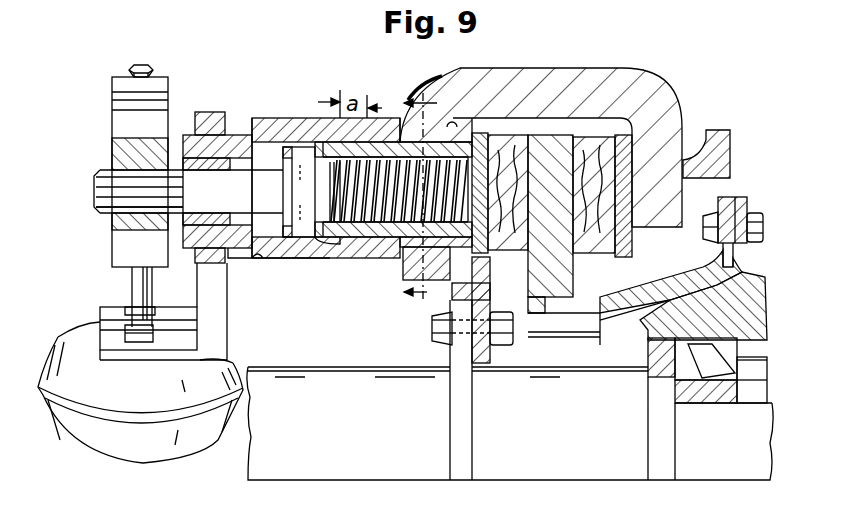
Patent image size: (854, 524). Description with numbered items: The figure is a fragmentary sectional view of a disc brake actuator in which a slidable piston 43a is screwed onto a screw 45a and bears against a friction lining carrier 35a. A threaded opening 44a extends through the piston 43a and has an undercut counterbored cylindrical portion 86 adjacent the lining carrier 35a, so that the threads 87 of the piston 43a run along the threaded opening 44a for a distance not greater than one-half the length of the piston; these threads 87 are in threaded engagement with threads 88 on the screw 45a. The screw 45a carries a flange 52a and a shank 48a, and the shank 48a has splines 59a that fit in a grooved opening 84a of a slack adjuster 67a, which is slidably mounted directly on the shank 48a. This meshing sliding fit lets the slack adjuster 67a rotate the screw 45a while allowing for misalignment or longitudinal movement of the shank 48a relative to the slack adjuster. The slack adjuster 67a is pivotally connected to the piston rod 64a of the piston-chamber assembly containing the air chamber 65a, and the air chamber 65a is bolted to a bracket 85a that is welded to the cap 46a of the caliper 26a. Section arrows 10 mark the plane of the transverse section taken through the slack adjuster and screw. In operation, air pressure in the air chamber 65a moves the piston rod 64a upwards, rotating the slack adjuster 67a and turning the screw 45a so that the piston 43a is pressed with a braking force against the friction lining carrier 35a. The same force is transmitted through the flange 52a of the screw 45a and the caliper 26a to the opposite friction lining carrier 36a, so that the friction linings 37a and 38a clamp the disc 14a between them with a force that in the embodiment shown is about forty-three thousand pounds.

The slack adjuster 67a is at (112, 115).
The splines 59a is at (92, 187).
The grooved opening 84a is at (112, 207).
The cap 46a is at (215, 150).
The shank 48a is at (228, 203).
The screw 45a is at (318, 157).
The threaded opening 44a is at (312, 142).
The slidable piston 43a is at (322, 152).
The undercut counterbored cylindrical portion 86 is at (396, 142).
The threads 87 is at (336, 240).
The threads 88 is at (352, 244).
The friction lining carrier 35a is at (480, 133).
The friction lining 37a is at (510, 165).
The disc 14a is at (552, 150).
The friction lining 38a is at (592, 145).
The friction lining carrier 36a is at (640, 110).
The caliper 26a is at (436, 80).
The section line 10 is at (435, 199).
The flange 52a is at (295, 262).
The bracket 85a is at (220, 336).
The piston rod 64a is at (132, 282).
The air chamber 65a is at (122, 447).